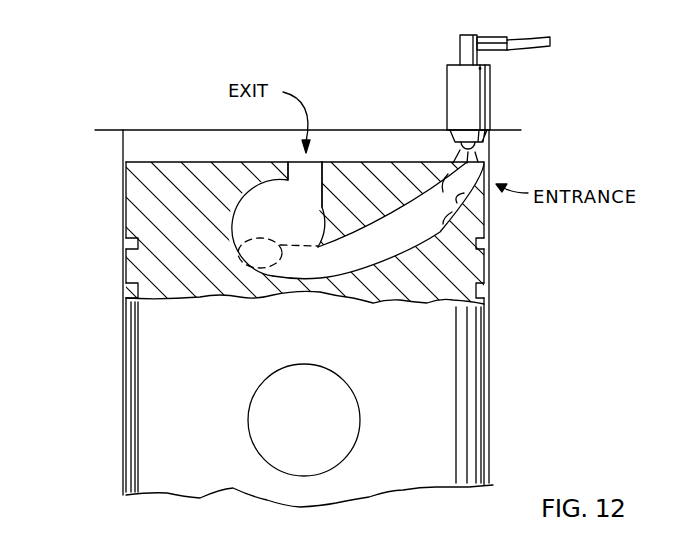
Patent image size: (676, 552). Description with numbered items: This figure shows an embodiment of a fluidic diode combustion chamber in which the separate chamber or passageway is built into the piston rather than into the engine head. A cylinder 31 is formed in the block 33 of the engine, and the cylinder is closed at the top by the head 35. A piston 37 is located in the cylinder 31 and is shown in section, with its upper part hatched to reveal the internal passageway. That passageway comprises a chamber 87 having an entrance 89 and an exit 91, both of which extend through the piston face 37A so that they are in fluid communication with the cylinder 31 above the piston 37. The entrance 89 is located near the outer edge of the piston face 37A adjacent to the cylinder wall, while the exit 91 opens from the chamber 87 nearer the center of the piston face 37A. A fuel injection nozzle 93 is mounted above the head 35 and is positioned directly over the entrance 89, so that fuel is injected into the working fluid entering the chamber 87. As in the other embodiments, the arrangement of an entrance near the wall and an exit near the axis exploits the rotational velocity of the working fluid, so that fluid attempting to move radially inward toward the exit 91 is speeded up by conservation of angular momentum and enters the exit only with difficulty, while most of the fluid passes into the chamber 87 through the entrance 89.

The cylinder 31 is at (122, 147).
The block 33 is at (316, 298).
The head 35 is at (189, 84).
The piston 37 is at (464, 377).
The piston face 37A is at (167, 162).
The chamber 87 is at (240, 235).
The entrance 89 is at (483, 178).
The exit 91 is at (310, 167).
The fuel injection nozzle 93 is at (493, 98).